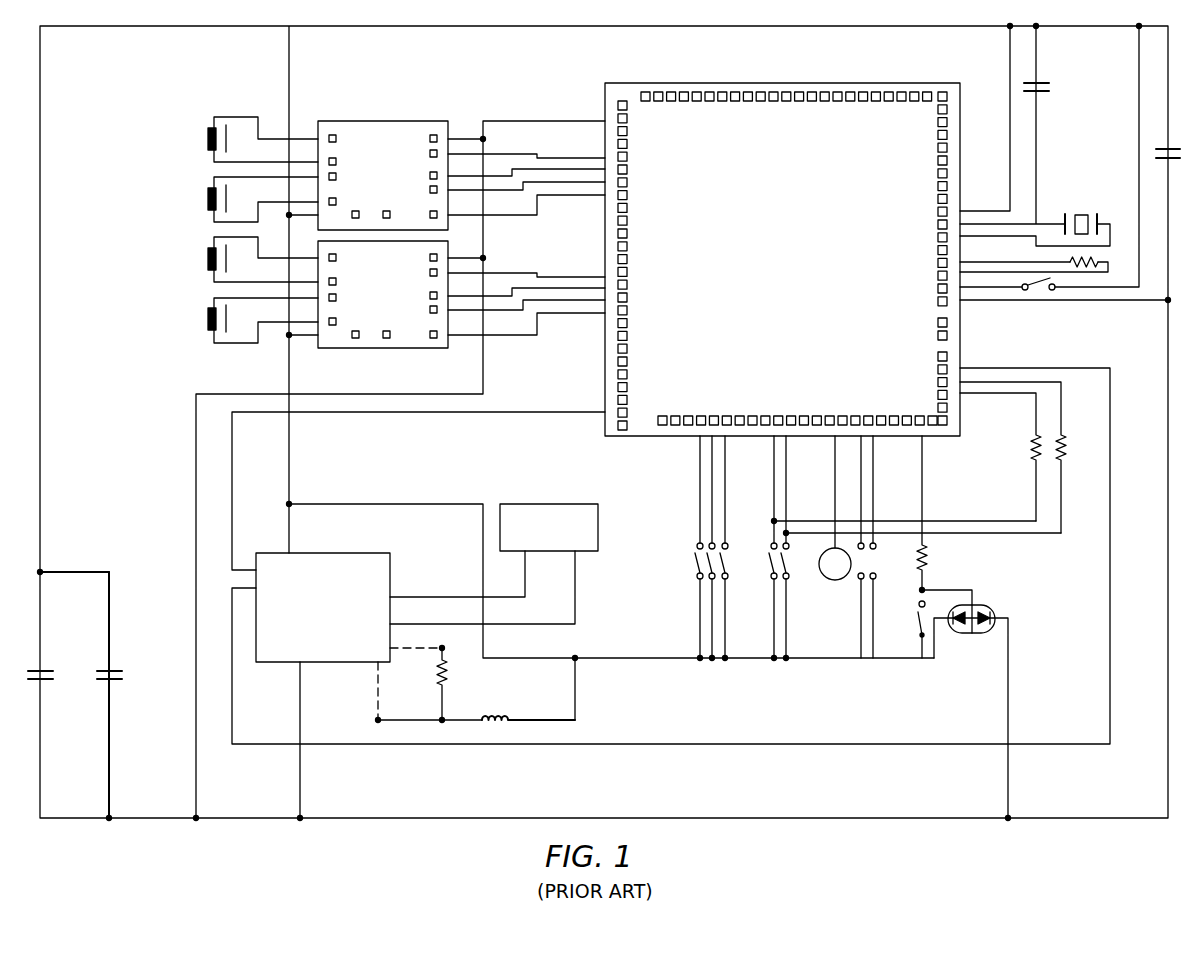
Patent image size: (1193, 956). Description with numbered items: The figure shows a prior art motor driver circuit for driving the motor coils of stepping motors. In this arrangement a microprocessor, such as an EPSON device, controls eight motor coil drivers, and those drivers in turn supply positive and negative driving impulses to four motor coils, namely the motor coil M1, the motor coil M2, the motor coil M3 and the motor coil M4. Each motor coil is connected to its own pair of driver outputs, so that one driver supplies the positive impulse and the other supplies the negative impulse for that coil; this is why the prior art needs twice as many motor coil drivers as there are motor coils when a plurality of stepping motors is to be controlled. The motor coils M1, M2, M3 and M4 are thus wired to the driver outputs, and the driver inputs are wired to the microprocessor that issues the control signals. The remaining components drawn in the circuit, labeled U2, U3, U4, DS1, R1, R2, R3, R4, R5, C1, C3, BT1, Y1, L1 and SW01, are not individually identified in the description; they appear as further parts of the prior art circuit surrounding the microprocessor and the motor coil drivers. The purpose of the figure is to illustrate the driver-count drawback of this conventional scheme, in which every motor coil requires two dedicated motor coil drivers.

The motor driver IC U2 is at (446, 163).
The motor driver IC U3 is at (446, 311).
The power supply IC U4 is at (323, 625).
The motor coil M1 is at (263, 139).
The motor coil M2 is at (263, 320).
The motor coil M3 is at (263, 259).
The motor coil M4 is at (263, 199).
The display DS1 is at (549, 527).
The resistor R1 is at (1099, 265).
The resistor R2 is at (429, 684).
The resistor R3 is at (941, 513).
The resistor R4 is at (1032, 457).
The resistor R5 is at (1003, 457).
The capacitor C1 is at (1045, 92).
The capacitor C3 is at (115, 696).
The battery BT1 is at (68, 625).
The crystal oscillator Y1 is at (1081, 214).
The inductor L1 is at (528, 709).
The switch SW01 is at (1042, 301).